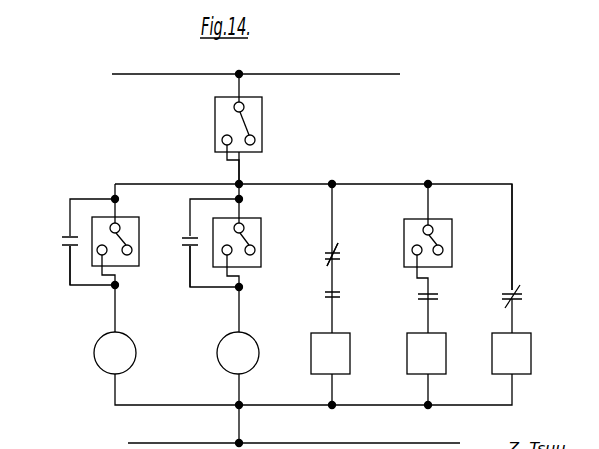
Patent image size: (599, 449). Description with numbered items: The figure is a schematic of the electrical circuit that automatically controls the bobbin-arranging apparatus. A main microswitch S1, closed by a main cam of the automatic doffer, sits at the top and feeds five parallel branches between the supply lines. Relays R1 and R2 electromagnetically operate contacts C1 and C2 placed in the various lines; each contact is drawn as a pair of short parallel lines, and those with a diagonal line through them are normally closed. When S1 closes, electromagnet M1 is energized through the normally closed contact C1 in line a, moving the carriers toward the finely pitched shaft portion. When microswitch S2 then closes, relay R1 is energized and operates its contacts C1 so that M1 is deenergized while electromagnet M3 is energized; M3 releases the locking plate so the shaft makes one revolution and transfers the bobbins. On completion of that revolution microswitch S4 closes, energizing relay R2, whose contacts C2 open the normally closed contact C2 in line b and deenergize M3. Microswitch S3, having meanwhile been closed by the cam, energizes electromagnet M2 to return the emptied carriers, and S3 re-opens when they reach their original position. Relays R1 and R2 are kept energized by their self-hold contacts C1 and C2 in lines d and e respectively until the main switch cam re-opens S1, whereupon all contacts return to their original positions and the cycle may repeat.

The main microswitch S1 is at (255, 131).
The microswitch S2 is at (262, 242).
The microswitch S3 is at (452, 243).
The microswitch S4 is at (132, 233).
The contacts C1 is at (355, 266).
The contacts C2 is at (251, 266).
The electrical relay R1 is at (238, 353).
The electrical relay R2 is at (115, 353).
The electromagnet M1 is at (511, 353).
The electromagnet M2 is at (426, 353).
The electromagnet M3 is at (330, 353).
The line a is at (512, 247).
The line b is at (336, 243).
The line d is at (190, 288).
The line e is at (84, 286).